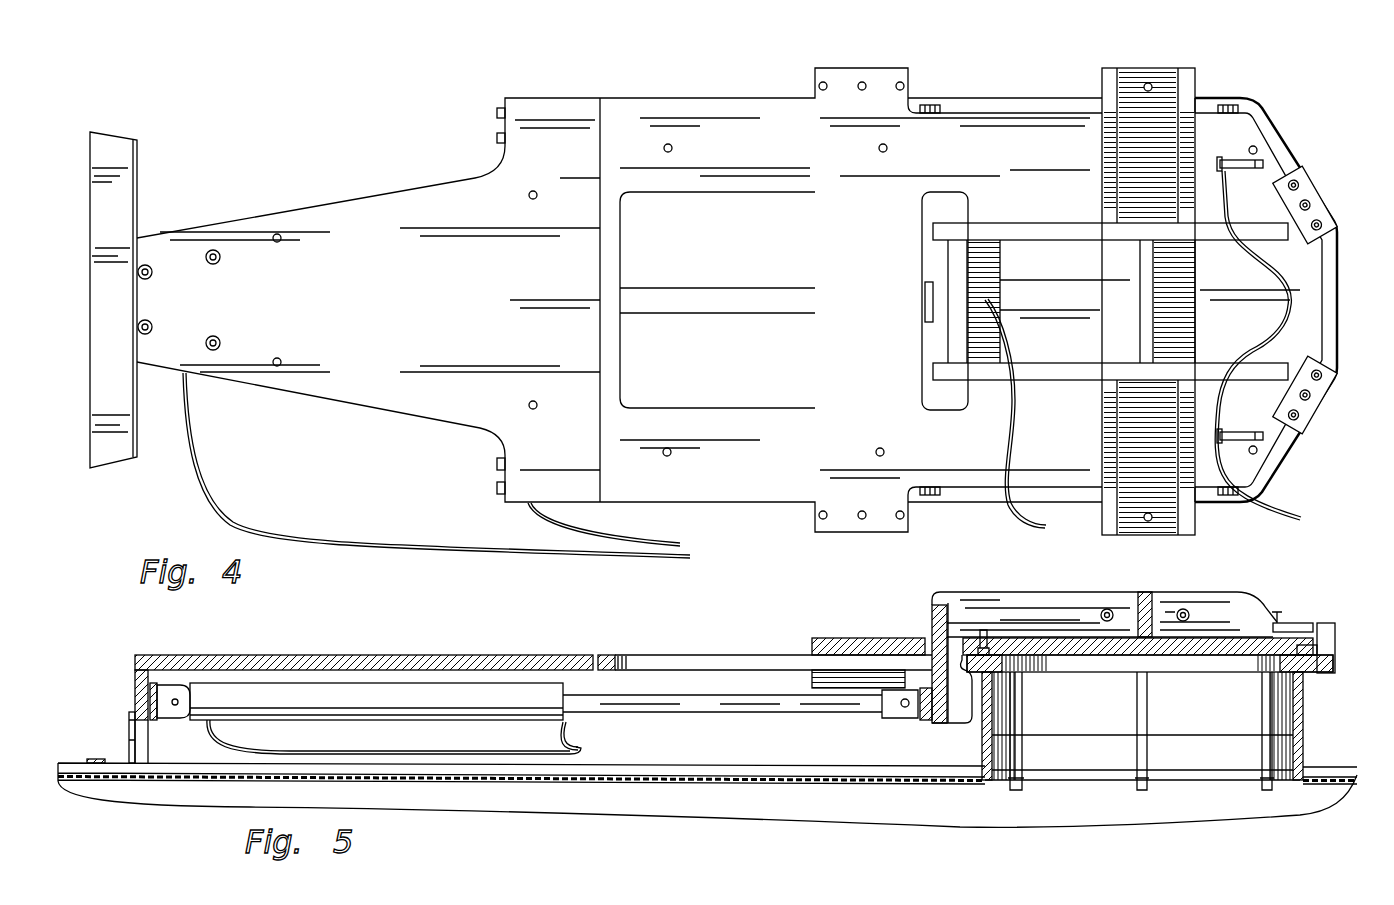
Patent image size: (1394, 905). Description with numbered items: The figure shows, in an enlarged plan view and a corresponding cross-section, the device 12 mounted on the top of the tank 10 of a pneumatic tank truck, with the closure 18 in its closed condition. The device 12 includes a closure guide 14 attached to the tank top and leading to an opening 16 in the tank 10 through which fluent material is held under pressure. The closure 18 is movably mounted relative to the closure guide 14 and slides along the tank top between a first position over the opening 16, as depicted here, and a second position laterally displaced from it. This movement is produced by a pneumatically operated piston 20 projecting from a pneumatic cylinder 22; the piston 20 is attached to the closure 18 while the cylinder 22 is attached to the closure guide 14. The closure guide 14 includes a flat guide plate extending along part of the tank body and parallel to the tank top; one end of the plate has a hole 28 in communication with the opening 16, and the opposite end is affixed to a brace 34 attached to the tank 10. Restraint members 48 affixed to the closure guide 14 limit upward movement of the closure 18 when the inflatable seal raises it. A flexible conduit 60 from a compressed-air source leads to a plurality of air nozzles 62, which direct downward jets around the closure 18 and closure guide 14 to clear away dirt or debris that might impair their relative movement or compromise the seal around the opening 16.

In FIG. 4, the tank 10 is at (1365, 235).
In FIG. 5, the tank 10 is at (1345, 748).
In FIG. 4, the device 12 is at (650, 90).
In FIG. 5, the device 12 is at (1263, 590).
In FIG. 4, the closure guide 14 is at (552, 120).
In FIG. 5, the closure guide 14 is at (527, 660).
In FIG. 5, the opening 16 is at (1258, 696).
In FIG. 4, the closure 18 is at (322, 215).
In FIG. 5, the closure 18 is at (280, 628).
In FIG. 4, the piston 20 is at (695, 300).
In FIG. 5, the piston 20 is at (715, 695).
In FIG. 5, the pneumatic cylinder 22 is at (385, 700).
In FIG. 5, the hole 28 is at (1212, 665).
In FIG. 4, the brace 34 is at (118, 152).
In FIG. 5, the brace 34 is at (129, 728).
In FIG. 4, the restraint members 48 is at (1304, 175).
In FIG. 5, the restraint members 48 is at (1340, 598).
In FIG. 4, the flexible conduit 60 is at (1262, 512).
In FIG. 4, the air nozzles 62 is at (1235, 160).